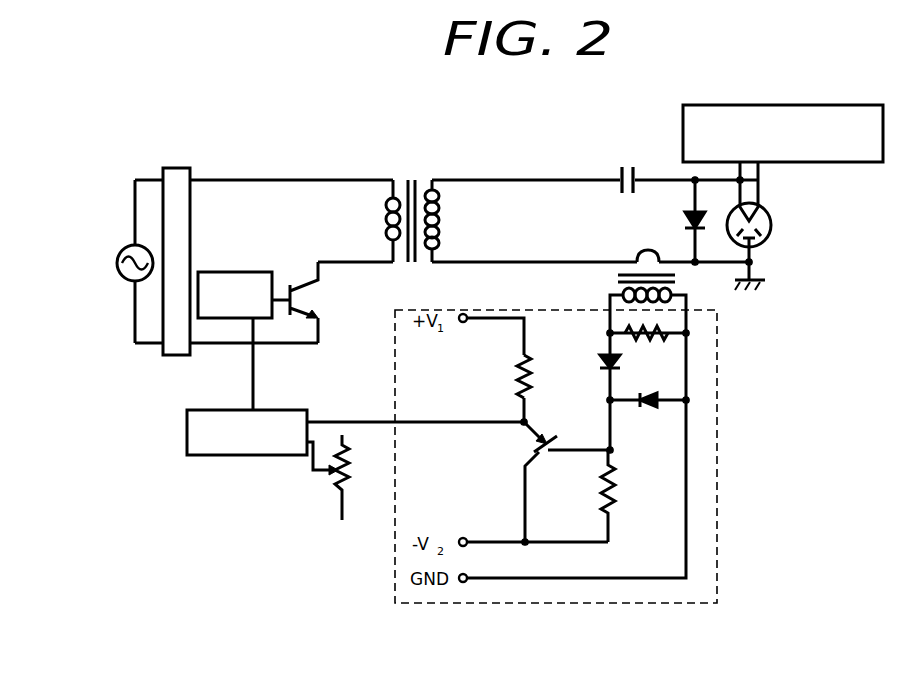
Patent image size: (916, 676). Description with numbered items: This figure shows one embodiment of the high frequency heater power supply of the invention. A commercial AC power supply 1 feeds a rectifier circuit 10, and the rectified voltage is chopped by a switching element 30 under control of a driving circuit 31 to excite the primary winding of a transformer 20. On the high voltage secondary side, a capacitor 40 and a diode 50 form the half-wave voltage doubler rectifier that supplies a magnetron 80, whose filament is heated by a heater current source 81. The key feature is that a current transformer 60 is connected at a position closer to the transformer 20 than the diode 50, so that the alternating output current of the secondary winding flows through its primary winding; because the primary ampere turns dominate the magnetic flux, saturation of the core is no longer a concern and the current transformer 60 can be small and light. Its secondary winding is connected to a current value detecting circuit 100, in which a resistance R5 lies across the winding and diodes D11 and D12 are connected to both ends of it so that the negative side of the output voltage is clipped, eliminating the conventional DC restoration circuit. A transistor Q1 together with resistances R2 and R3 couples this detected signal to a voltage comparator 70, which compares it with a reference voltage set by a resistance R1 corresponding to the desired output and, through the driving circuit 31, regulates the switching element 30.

The commercial AC power supply 1 is at (121, 250).
The rectifier circuit 10 is at (190, 205).
The transformer 20 is at (420, 180).
The switching element 30 is at (311, 292).
The driving circuit 31 is at (250, 272).
The capacitor 40 is at (628, 166).
The diode 50 is at (684, 226).
The current transformer 60 is at (617, 276).
The voltage comparator 70 is at (271, 455).
The magnetron 80 is at (771, 224).
The heater current source 81 is at (743, 105).
The current value detecting circuit 100 is at (722, 321).
The resistance R1 is at (341, 477).
The resistance R2 is at (538, 376).
The resistance R3 is at (622, 496).
The resistance R5 is at (650, 344).
The transistor Q1 is at (567, 482).
The diode D11 is at (628, 358).
The diode D12 is at (658, 415).